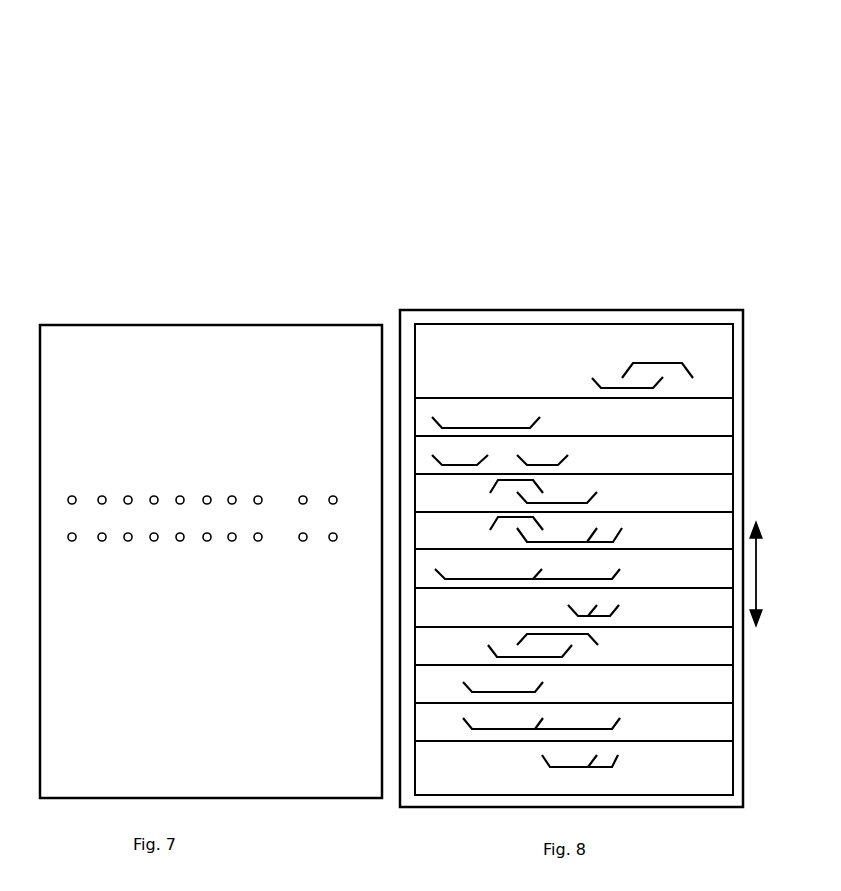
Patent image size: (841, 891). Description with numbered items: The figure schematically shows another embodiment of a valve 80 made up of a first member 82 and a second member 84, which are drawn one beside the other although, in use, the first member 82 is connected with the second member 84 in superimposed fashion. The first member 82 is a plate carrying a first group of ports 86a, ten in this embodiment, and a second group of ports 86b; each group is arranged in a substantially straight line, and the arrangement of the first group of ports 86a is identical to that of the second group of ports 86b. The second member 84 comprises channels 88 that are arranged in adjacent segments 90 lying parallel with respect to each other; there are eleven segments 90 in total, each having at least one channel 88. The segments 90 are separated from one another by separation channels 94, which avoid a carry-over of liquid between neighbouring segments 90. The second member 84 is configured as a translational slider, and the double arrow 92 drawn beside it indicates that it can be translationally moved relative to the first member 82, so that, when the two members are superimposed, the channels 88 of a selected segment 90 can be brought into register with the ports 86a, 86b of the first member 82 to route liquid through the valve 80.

In FIG. 8, the valve 80 is at (555, 237).
In FIG. 7, the first member 82 is at (227, 293).
In FIG. 8, the second member 84 is at (505, 292).
In FIG. 7, the first group of ports 86a is at (102, 494).
In FIG. 7, the second group of ports 86b is at (105, 540).
In FIG. 8, the channel 88 is at (660, 363).
In FIG. 8, the segment 90 is at (703, 425).
In FIG. 8, the double arrow 92 is at (758, 560).
In FIG. 8, the separation channel 94 is at (707, 508).